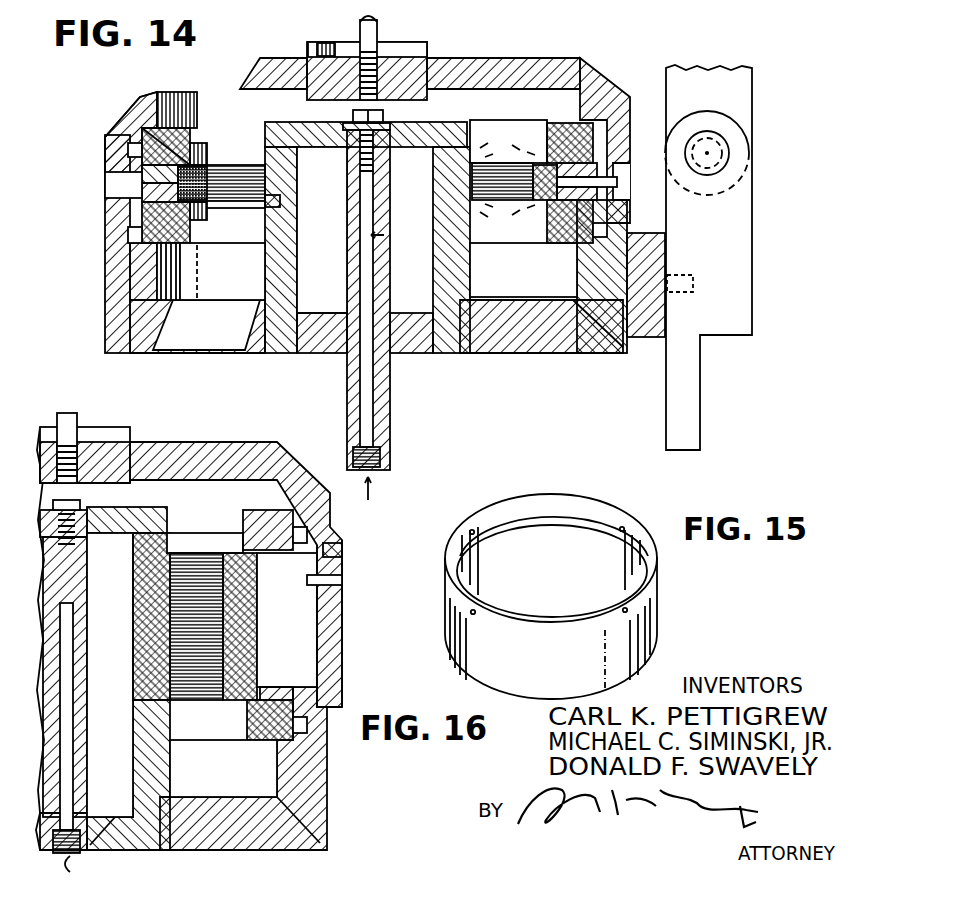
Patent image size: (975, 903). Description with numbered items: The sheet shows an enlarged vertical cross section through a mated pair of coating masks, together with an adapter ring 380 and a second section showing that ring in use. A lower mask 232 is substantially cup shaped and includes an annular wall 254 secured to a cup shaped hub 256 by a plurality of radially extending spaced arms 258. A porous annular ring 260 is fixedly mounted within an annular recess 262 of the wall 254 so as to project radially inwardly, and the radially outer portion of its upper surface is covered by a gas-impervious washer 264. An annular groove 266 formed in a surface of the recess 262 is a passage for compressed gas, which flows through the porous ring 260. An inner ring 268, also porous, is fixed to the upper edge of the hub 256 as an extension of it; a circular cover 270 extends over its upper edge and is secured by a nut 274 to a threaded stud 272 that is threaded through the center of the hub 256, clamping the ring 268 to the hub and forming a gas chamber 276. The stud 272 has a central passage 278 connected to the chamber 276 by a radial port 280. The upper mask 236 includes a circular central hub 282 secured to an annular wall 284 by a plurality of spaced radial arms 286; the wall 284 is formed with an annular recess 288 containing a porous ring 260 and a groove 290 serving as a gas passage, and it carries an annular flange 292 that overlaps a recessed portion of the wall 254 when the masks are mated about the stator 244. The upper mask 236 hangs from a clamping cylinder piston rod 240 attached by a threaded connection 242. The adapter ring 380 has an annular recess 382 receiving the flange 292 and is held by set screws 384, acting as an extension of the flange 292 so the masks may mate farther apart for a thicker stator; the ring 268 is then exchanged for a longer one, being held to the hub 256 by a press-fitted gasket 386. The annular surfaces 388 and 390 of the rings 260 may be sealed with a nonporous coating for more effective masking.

In FIG. 14, the lower mask 232 is at (573, 361).
In FIG. 16, the lower mask 232 is at (333, 816).
In FIG. 14, the upper mask 236 is at (599, 61).
In FIG. 16, the upper mask 236 is at (198, 442).
In FIG. 14, the piston rod 240 is at (377, 27).
In FIG. 14, the threaded connection 242 is at (347, 60).
In FIG. 14, the stator 244 is at (514, 154).
In FIG. 16, the stator 244 is at (268, 650).
In FIG. 14, the annular wall 254 is at (107, 280).
In FIG. 14, the cup shaped hub 256 is at (427, 345).
In FIG. 16, the cup shaped hub 256 is at (111, 845).
In FIG. 14, the radially extending spaced arms 258 is at (188, 348).
In FIG. 14, the annular ring 260 is at (180, 132).
In FIG. 14, the annular recess 262 is at (168, 252).
In FIG. 14, the washer 264 is at (150, 198).
In FIG. 14, the annular groove 266 is at (130, 243).
In FIG. 14, the inner ring 268 is at (297, 192).
In FIG. 16, the inner ring 268 is at (140, 553).
In FIG. 14, the circular cover 270 is at (307, 148).
In FIG. 14, the threaded stud 272 is at (390, 370).
In FIG. 14, the nut 274 is at (383, 113).
In FIG. 14, the gas chamber 276 is at (333, 314).
In FIG. 14, the central passage 278 is at (347, 388).
In FIG. 14, the radial port 280 is at (386, 238).
In FIG. 14, the circular central hub 282 is at (428, 46).
In FIG. 14, the annular wall 284 is at (117, 142).
In FIG. 14, the cover band 286 is at (497, 60).
In FIG. 14, the annular recess 288 is at (148, 102).
In FIG. 14, the groove 290 is at (135, 149).
In FIG. 14, the annular flange 292 is at (107, 185).
In FIG. 16, the annular flange 292 is at (345, 581).
In FIG. 15, the adapter ring 380 is at (588, 492).
In FIG. 16, the adapter ring 380 is at (345, 672).
In FIG. 15, the annular recess 382 is at (507, 538).
In FIG. 15, the set screws 384 is at (624, 530).
In FIG. 16, the set screws 384 is at (345, 553).
In FIG. 14, the gasket 386 is at (273, 206).
In FIG. 16, the gasket 386 is at (140, 701).
In FIG. 14, the annular surface 388 is at (597, 240).
In FIG. 14, the annular surface 390 is at (565, 236).